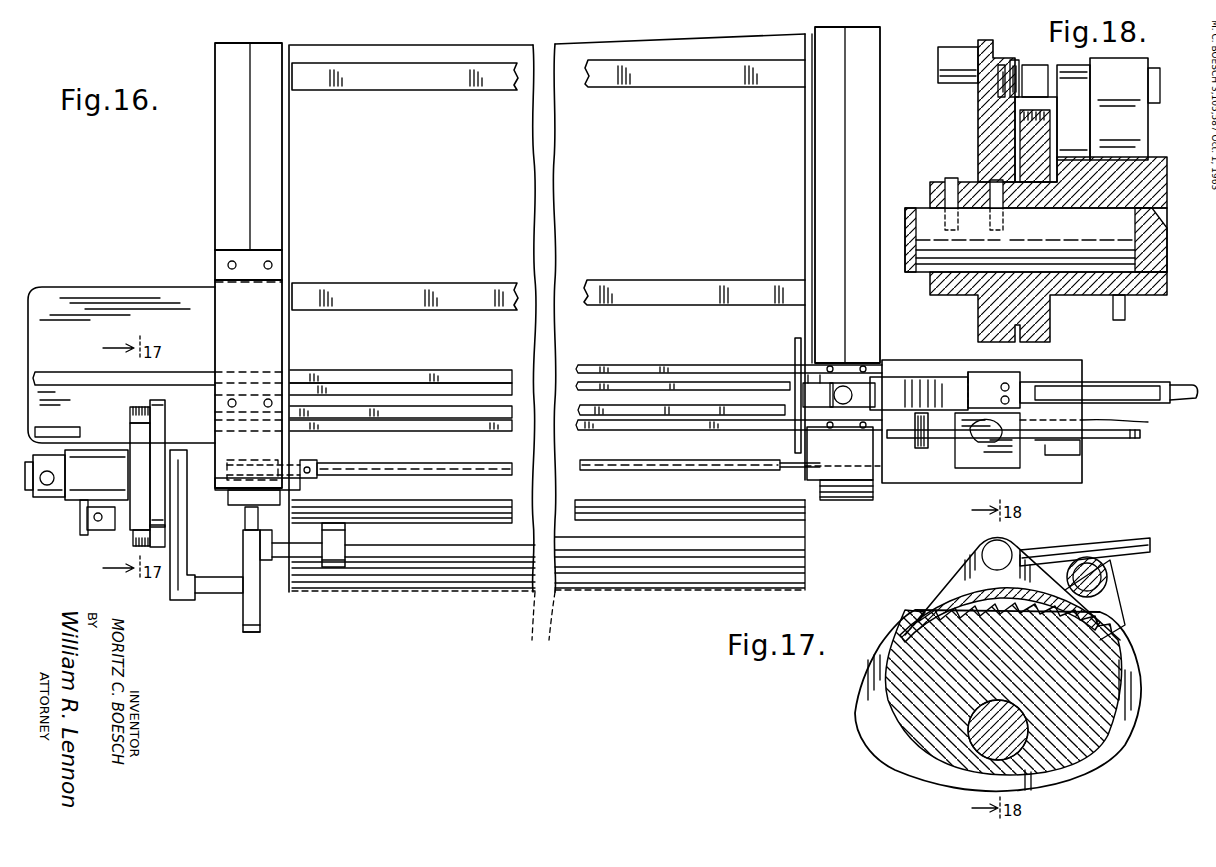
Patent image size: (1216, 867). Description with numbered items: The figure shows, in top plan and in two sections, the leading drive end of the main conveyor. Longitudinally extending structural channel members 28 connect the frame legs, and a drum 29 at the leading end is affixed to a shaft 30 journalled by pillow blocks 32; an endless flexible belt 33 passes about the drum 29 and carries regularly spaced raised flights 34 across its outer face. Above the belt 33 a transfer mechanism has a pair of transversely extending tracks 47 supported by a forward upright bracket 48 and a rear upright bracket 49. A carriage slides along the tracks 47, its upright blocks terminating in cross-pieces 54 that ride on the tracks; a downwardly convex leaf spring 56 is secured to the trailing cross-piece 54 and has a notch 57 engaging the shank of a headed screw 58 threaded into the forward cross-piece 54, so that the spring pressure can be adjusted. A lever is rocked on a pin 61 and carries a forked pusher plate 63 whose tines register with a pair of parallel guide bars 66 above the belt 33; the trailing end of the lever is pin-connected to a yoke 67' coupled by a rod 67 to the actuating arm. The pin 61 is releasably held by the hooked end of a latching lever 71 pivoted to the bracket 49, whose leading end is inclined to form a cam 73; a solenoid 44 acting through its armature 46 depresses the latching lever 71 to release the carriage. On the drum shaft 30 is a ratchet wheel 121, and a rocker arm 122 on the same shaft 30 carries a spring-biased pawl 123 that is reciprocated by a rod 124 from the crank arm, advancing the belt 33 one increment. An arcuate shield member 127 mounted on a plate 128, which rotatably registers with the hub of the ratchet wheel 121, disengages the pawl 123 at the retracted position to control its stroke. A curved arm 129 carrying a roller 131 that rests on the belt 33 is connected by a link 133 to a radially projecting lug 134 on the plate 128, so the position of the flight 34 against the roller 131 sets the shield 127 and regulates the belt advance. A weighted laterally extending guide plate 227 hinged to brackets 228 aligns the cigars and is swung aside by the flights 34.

In FIG. 16, the structural channel member 28 is at (216, 175).
In FIG. 16, the drum 29 is at (539, 619).
In FIG. 16, the shaft 30 is at (33, 496).
In FIG. 18, the shaft 30 is at (1110, 248).
In FIG. 17, the shaft 30 is at (988, 755).
In FIG. 16, the pillow block 32 is at (243, 535).
In FIG. 16, the endless flexible belt 33 is at (463, 592).
In FIG. 16, the flight 34 is at (446, 80).
In FIG. 16, the solenoid 44 is at (980, 468).
In FIG. 16, the solenoid armature 46 is at (978, 447).
In FIG. 16, the track 47 is at (443, 408).
In FIG. 16, the forward upright bracket 48 is at (265, 352).
In FIG. 16, the rear upright bracket 49 is at (1097, 422).
In FIG. 16, the cross-piece 54 is at (856, 374).
In FIG. 16, the leaf spring 56 is at (895, 390).
In FIG. 16, the notch 57 is at (808, 390).
In FIG. 16, the headed screw 58 is at (844, 386).
In FIG. 16, the pin 61 is at (950, 450).
In FIG. 16, the forked pusher plate 63 is at (795, 442).
In FIG. 16, the guide bar 66 is at (367, 370).
In FIG. 16, the rod 67 is at (1185, 376).
In FIG. 16, the yoke 67' is at (1163, 359).
In FIG. 16, the latching lever 71 is at (1125, 440).
In FIG. 16, the cam 73 is at (902, 448).
In FIG. 16, the ratchet wheel 121 is at (131, 410).
In FIG. 18, the ratchet wheel 121 is at (1032, 163).
In FIG. 17, the ratchet wheel 121 is at (920, 708).
In FIG. 16, the rocker arm 122 is at (100, 532).
In FIG. 18, the rocker arm 122 is at (1080, 135).
In FIG. 16, the pawl 123 is at (147, 528).
In FIG. 18, the pawl 123 is at (1042, 52).
In FIG. 17, the pawl 123 is at (1108, 608).
In FIG. 16, the rod 124 is at (88, 533).
In FIG. 18, the rod 124 is at (1114, 312).
In FIG. 16, the arcuate shield member 127 is at (140, 460).
In FIG. 18, the arcuate shield member 127 is at (1092, 96).
In FIG. 17, the arcuate shield member 127 is at (922, 605).
In FIG. 16, the plate 128 is at (157, 402).
In FIG. 18, the plate 128 is at (997, 117).
In FIG. 17, the plate 128 is at (884, 655).
In FIG. 16, the curved arm 129 is at (250, 633).
In FIG. 16, the roller 131 is at (348, 555).
In FIG. 16, the link 133 is at (182, 548).
In FIG. 18, the link 133 is at (948, 57).
In FIG. 17, the link 133 is at (1090, 544).
In FIG. 16, the lug 134 is at (160, 453).
In FIG. 18, the lug 134 is at (985, 44).
In FIG. 17, the lug 134 is at (965, 565).
In FIG. 16, the guide plate 227 is at (445, 468).
In FIG. 16, the bracket 228 is at (308, 462).